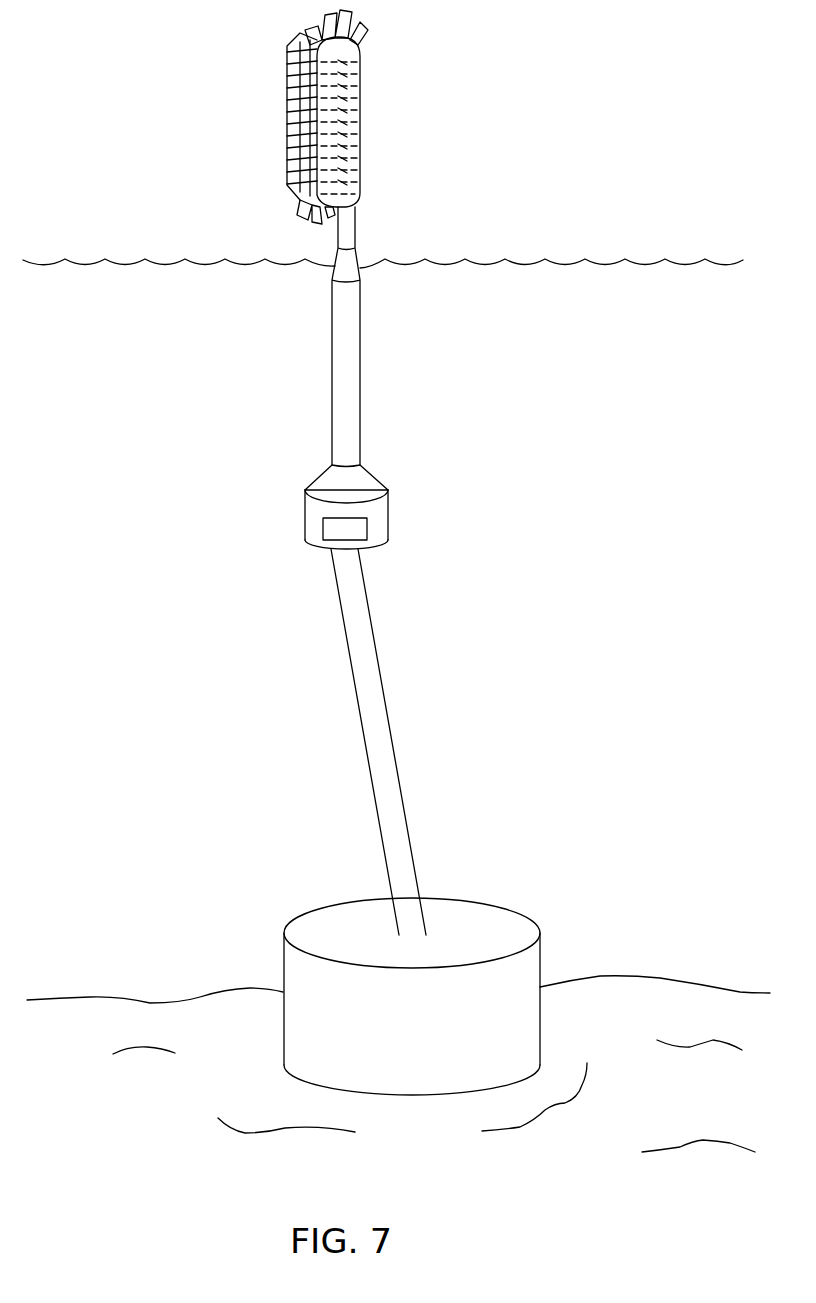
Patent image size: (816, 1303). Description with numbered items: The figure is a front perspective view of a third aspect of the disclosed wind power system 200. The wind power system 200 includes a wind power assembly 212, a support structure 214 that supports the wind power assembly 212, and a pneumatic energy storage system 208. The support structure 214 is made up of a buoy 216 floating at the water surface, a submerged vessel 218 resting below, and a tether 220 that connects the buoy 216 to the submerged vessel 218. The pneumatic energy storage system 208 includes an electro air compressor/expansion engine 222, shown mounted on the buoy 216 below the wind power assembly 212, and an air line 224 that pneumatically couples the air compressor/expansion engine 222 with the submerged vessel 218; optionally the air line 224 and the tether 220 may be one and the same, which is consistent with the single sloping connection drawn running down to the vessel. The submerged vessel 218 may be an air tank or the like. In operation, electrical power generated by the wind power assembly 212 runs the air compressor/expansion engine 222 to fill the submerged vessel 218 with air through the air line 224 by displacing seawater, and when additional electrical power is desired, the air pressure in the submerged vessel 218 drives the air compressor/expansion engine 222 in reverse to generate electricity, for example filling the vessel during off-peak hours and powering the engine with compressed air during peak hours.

The wind power system 200 is at (614, 121).
The wind power assembly 212 is at (266, 118).
The buoy 216 is at (360, 363).
The support structure 214 is at (450, 530).
The electro air compressor/expansion engine 222 is at (323, 528).
The pneumatic energy storage system 208 is at (278, 653).
The tether 220 is at (362, 742).
The air line 224 is at (387, 698).
The submerged vessel 218 is at (542, 945).